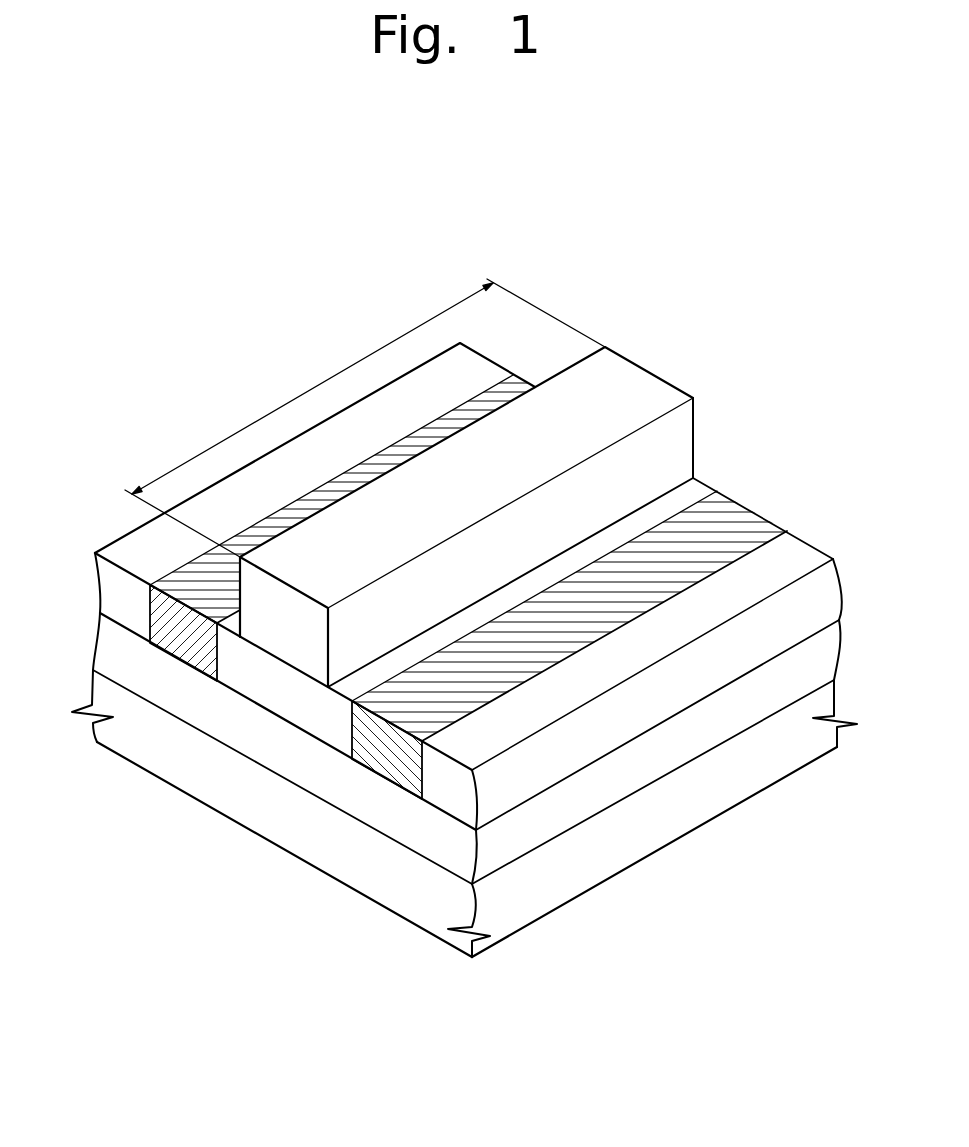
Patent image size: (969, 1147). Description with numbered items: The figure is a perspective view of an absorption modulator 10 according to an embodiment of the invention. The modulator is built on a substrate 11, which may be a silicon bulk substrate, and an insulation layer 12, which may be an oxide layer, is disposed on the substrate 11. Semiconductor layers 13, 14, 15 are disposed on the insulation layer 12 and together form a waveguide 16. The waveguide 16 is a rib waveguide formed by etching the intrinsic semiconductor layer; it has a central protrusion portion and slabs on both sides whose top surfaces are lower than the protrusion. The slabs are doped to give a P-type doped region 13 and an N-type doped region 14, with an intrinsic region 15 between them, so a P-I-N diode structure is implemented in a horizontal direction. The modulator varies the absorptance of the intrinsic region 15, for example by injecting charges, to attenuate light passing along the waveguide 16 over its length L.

The semiconductor optical device 10 is at (772, 243).
The substrate 11 is at (430, 900).
The insulation layer 12 is at (408, 828).
The P-type doped region 13 is at (92, 787).
The N-type doped region 14 is at (252, 880).
The intrinsic region 15 is at (137, 815).
The waveguide 16 is at (442, 621).